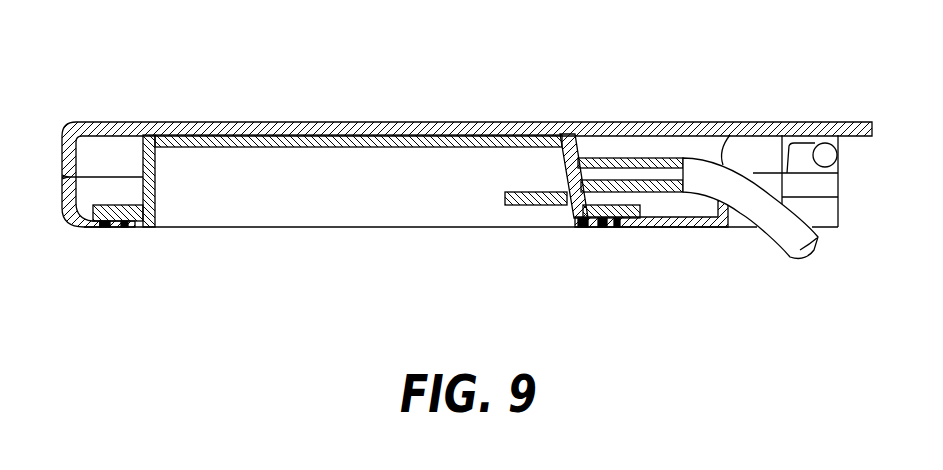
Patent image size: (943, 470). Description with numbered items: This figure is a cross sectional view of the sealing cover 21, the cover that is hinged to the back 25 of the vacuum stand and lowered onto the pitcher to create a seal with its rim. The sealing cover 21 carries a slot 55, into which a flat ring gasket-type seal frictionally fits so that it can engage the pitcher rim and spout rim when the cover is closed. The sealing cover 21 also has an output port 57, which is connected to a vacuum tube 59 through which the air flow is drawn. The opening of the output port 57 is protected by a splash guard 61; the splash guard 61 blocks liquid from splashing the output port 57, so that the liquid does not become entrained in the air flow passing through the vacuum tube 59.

The sealing cover 21 is at (338, 122).
The back 25 is at (600, 228).
The slot 55 is at (118, 226).
The output port 57 is at (650, 158).
The vacuum tube 59 is at (780, 232).
The splash guard 61 is at (533, 205).